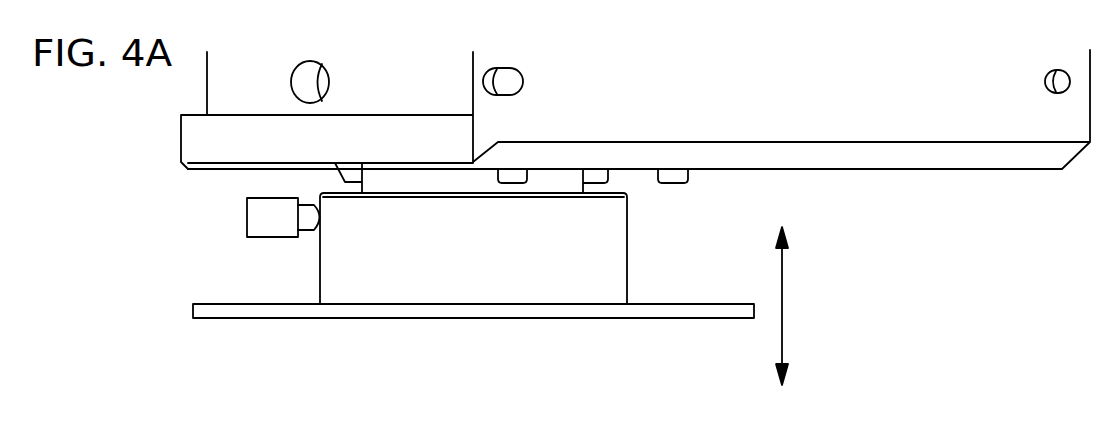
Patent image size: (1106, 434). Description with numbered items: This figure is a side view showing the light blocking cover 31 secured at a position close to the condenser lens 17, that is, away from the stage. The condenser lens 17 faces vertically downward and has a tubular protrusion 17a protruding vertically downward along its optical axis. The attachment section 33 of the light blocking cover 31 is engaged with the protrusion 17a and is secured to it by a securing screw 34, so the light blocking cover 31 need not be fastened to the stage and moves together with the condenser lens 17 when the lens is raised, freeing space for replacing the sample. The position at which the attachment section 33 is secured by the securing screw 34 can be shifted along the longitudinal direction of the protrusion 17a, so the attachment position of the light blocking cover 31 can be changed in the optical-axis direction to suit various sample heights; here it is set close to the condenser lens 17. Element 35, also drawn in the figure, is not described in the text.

The condenser lens 17 is at (943, 199).
The protrusion 17a is at (381, 183).
The light blocking cover 31 is at (143, 244).
The attachment section 33 is at (337, 268).
The securing screw 34 is at (247, 213).
The base plate 35 is at (232, 318).